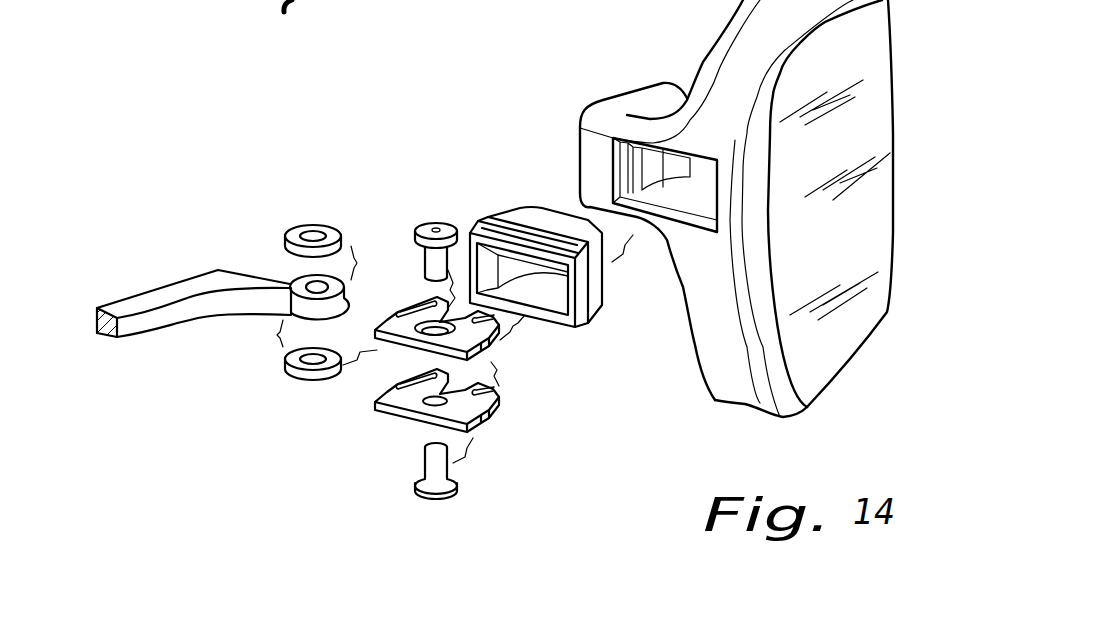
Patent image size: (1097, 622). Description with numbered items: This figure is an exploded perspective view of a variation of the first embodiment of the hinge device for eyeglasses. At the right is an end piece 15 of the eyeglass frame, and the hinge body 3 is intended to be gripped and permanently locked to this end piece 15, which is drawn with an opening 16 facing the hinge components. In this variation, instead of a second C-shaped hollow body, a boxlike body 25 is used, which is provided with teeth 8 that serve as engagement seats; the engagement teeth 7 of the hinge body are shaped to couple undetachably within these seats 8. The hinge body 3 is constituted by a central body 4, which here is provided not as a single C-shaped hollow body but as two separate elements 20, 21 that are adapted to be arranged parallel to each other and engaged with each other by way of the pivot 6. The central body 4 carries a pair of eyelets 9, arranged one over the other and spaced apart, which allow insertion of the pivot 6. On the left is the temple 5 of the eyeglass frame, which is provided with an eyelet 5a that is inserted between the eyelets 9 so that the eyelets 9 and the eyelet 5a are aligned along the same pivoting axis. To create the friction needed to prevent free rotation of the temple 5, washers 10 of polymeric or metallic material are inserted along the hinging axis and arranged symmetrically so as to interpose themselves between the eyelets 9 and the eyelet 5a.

The hinge body 3 is at (594, 392).
The central body 4 is at (496, 438).
The temple 5 is at (177, 290).
The eyelet 5a is at (288, 281).
The pivot 6 is at (427, 228).
The engagement teeth 7 is at (390, 317).
The engagement seats 8 is at (494, 257).
The eyelets 9 is at (430, 328).
The washers 10 is at (307, 228).
The end piece 15 is at (642, 100).
The window opening 16 is at (687, 210).
The separate element 20 is at (376, 331).
The separate element 21 is at (387, 410).
The boxlike body 25 is at (522, 228).